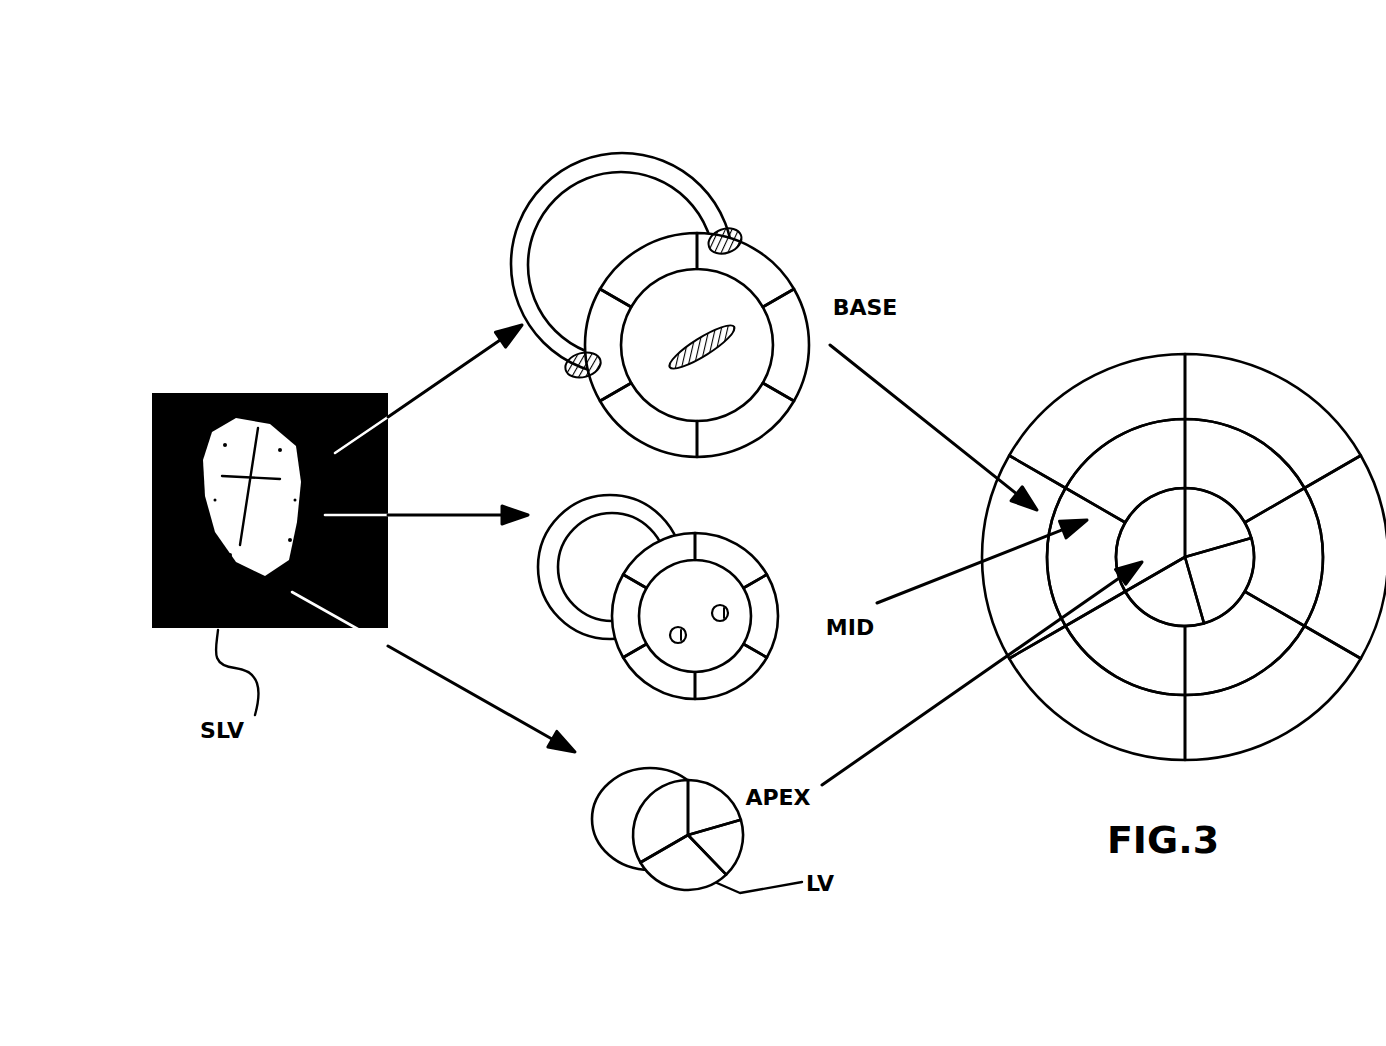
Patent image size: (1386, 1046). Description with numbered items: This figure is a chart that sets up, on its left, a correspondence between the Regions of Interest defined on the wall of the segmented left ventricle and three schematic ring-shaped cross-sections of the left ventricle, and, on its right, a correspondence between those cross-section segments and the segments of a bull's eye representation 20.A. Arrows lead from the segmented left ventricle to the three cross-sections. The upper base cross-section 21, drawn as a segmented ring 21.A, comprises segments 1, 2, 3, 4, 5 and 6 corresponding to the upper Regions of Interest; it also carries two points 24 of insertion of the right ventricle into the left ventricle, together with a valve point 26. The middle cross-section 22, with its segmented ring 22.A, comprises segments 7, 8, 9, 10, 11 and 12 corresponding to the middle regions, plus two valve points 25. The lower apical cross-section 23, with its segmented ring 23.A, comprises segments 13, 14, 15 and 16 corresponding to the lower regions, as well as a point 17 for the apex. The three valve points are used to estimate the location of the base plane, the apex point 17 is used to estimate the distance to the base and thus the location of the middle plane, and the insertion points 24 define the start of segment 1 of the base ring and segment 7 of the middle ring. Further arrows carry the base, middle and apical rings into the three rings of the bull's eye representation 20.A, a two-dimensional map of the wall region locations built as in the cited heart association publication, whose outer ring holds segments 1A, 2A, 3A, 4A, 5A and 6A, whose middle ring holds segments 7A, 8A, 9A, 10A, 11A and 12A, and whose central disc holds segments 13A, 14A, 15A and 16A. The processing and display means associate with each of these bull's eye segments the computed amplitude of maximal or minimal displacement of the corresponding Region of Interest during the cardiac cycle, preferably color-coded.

The basal short-axis slice 21 is at (707, 183).
The basal slice segment ring 21.A is at (816, 336).
The point of insertion of the right ventricle 24 is at (733, 232).
The valve point 26 is at (727, 320).
The mid short-axis slice 22 is at (570, 508).
The mid slice segment ring 22.A is at (747, 579).
The valve point 25 is at (724, 618).
The apical short-axis slice 23 is at (678, 768).
The apical slice segmentation 23.A is at (598, 840).
The apex point 17 is at (697, 840).
The bull's eye representation 20.A is at (1184, 530).
The segment 1 of the BASE ring 1 is at (745, 270).
The segment 2 of the BASE ring 2 is at (648, 270).
The segment 3 of the BASE ring 3 is at (608, 345).
The segment 4 of the BASE ring 4 is at (648, 420).
The segment 5 of the BASE ring 5 is at (745, 420).
The segment 6 of the BASE ring 6 is at (786, 345).
The segment 7 of the MID ring 7 is at (731, 560).
The segment 8 of the MID ring 8 is at (659, 560).
The segment 9 of the MID ring 9 is at (629, 616).
The segment 10 of the MID ring 10 is at (659, 671).
The segment 11 of the MID ring 11 is at (731, 671).
The segment 12 of the MID ring 12 is at (761, 616).
The segment 13 of the APEX ring 13 is at (714, 807).
The segment 14 of the APEX ring 14 is at (660, 821).
The segment 15 of the APEX ring 15 is at (683, 862).
The segment 16 of the APEX ring 16 is at (715, 847).
The segment 1A of the bull's eye representation 1A is at (1273, 421).
The segment 2A of the bull's eye representation 2A is at (1097, 421).
The segment 3A of the bull's eye representation 3A is at (1023, 557).
The segment 4A of the bull's eye representation 4A is at (1097, 693).
The segment 5A of the bull's eye representation 5A is at (1273, 693).
The segment 6A of the bull's eye representation 6A is at (1346, 557).
The segment 7A of the bull's eye representation 7A is at (1245, 471).
The segment 8A of the bull's eye representation 8A is at (1126, 471).
The segment 9A of the bull's eye representation 9A is at (1086, 557).
The segment 10A of the bull's eye representation 10A is at (1126, 644).
The segment 11A of the bull's eye representation 11A is at (1245, 644).
The segment 12A of the bull's eye representation 12A is at (1284, 557).
The segment 13A of the bull's eye representation 13A is at (1218, 522).
The segment 14A of the bull's eye representation 14A is at (1150, 540).
The segment 15A of the bull's eye representation 15A is at (1164, 591).
The segment 16A of the bull's eye representation 16A is at (1219, 580).